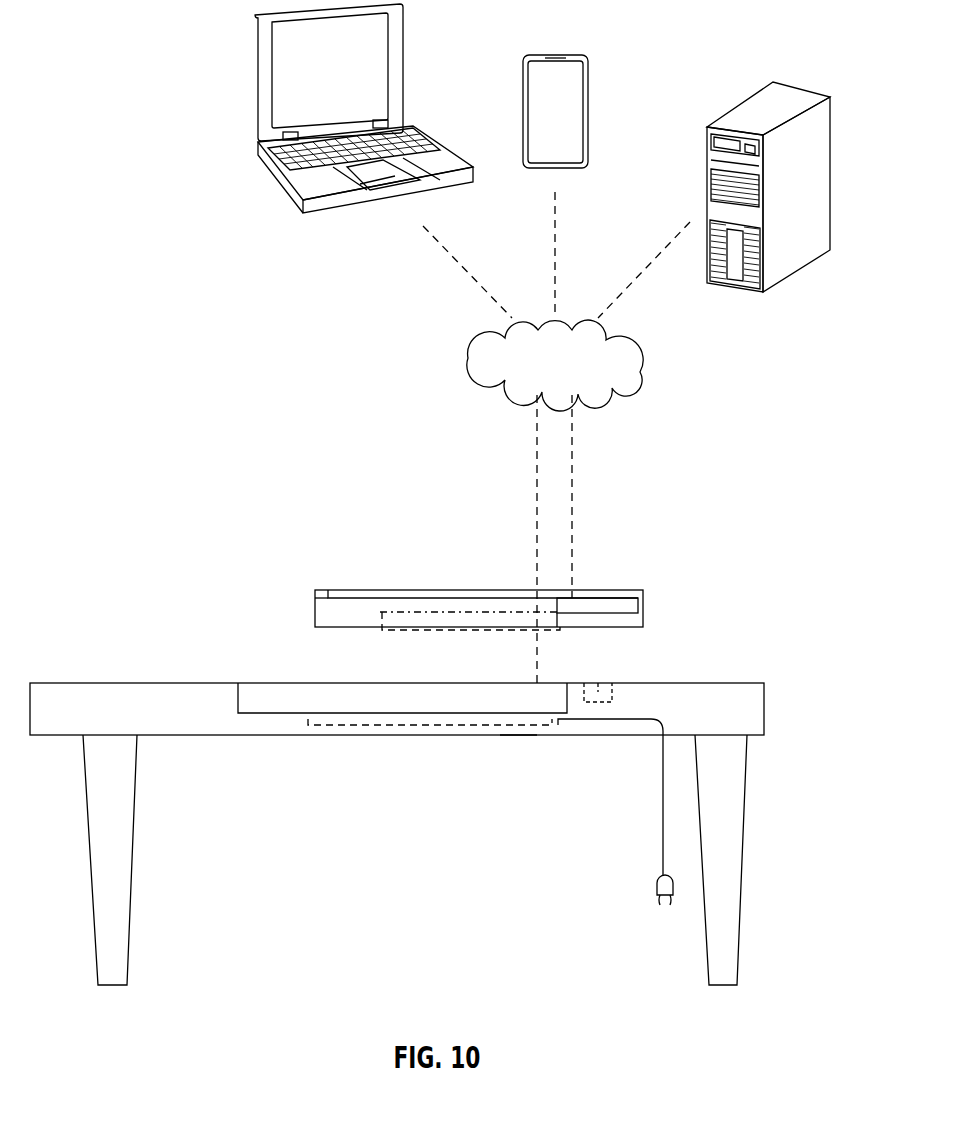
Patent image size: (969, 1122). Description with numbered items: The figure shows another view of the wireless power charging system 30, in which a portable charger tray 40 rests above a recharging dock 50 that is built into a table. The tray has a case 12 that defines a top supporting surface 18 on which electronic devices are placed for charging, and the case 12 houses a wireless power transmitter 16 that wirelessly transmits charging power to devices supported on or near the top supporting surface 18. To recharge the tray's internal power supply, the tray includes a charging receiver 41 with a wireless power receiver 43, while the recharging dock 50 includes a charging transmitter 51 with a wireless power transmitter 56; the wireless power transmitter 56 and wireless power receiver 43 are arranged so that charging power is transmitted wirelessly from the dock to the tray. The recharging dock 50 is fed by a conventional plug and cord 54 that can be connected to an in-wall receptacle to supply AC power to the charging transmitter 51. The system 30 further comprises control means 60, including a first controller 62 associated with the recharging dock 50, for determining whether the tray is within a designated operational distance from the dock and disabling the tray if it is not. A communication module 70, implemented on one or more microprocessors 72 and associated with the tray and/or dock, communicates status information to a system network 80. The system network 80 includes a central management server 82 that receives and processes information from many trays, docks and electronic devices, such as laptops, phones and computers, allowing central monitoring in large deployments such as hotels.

The case 12 is at (479, 663).
The wireless power transmitter 16 is at (453, 594).
The top supporting surface 18 is at (357, 589).
The wireless power charging system 30 is at (289, 496).
The portable charger tray 40 is at (322, 613).
The charging receiver 41 is at (441, 640).
The wireless power receiver 43 is at (420, 633).
The recharging dock 50 is at (397, 815).
The charging transmitter 51 is at (430, 756).
The wireless power transmitter 56 is at (409, 740).
The plug and cord 54 is at (657, 888).
The control means 60 is at (646, 673).
The first controller 62 is at (605, 683).
The communication module 70 is at (586, 663).
The microprocessors 72 is at (608, 598).
The system network 80 is at (541, 367).
The central management server 82 is at (783, 99).